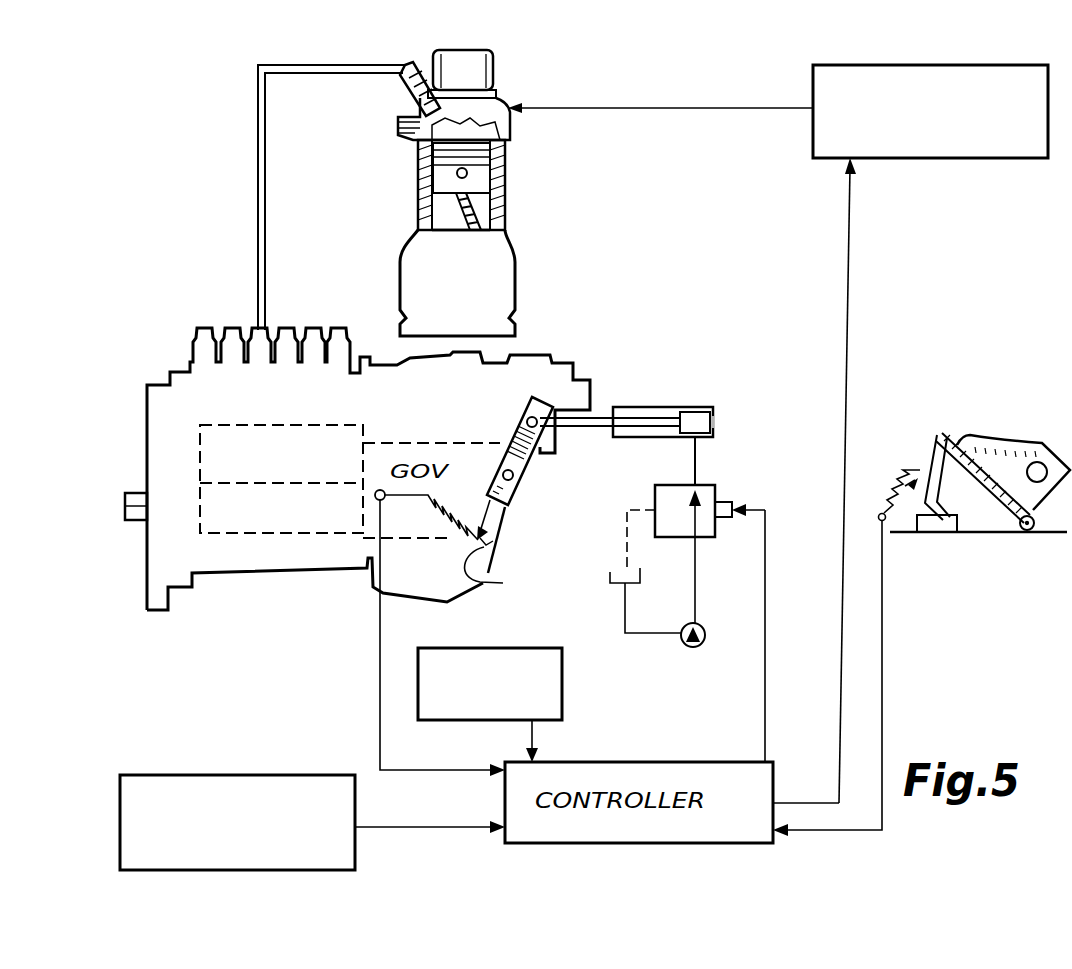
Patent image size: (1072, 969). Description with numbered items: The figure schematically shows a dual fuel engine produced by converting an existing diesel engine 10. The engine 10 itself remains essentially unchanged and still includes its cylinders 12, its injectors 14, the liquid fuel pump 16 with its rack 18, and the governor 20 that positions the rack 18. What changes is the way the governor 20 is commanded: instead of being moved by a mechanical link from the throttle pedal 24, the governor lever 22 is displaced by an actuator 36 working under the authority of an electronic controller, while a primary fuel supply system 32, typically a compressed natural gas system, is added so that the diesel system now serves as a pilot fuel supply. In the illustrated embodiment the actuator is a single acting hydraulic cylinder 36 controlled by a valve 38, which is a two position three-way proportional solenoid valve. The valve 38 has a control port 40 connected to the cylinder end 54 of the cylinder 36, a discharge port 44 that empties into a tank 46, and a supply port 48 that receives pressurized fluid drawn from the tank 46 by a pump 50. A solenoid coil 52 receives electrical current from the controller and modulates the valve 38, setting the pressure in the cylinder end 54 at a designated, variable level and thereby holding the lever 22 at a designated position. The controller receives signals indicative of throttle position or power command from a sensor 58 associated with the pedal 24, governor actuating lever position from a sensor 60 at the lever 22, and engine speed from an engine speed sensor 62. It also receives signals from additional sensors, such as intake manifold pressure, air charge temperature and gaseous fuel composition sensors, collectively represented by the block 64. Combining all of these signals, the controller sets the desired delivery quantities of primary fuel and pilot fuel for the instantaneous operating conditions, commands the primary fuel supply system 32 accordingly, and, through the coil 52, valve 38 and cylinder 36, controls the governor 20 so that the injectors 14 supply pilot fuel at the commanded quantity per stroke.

The engine 10 is at (260, 60).
The cylinders 12 is at (508, 171).
The injectors 14 is at (408, 92).
The pump 16 is at (222, 427).
The rack 18 is at (210, 510).
The governor 20 is at (495, 543).
The lever 22 is at (542, 392).
The throttle pedal 24 is at (945, 435).
The primary fuel supply system 32 is at (980, 58).
The actuator 36 is at (692, 408).
The valve 38 is at (712, 470).
The control port 40 is at (693, 483).
The discharge port 44 is at (653, 507).
The tank 46 is at (610, 575).
The supply port 48 is at (697, 538).
The pump 50 is at (701, 625).
The solenoid coil 52 is at (728, 500).
The cylinder end 54 is at (716, 423).
The throttle position sensor 58 is at (900, 510).
The governor actuating lever position sensor 60 is at (501, 572).
The engine speed sensor 62 is at (252, 780).
The additional sensors 64 is at (562, 695).